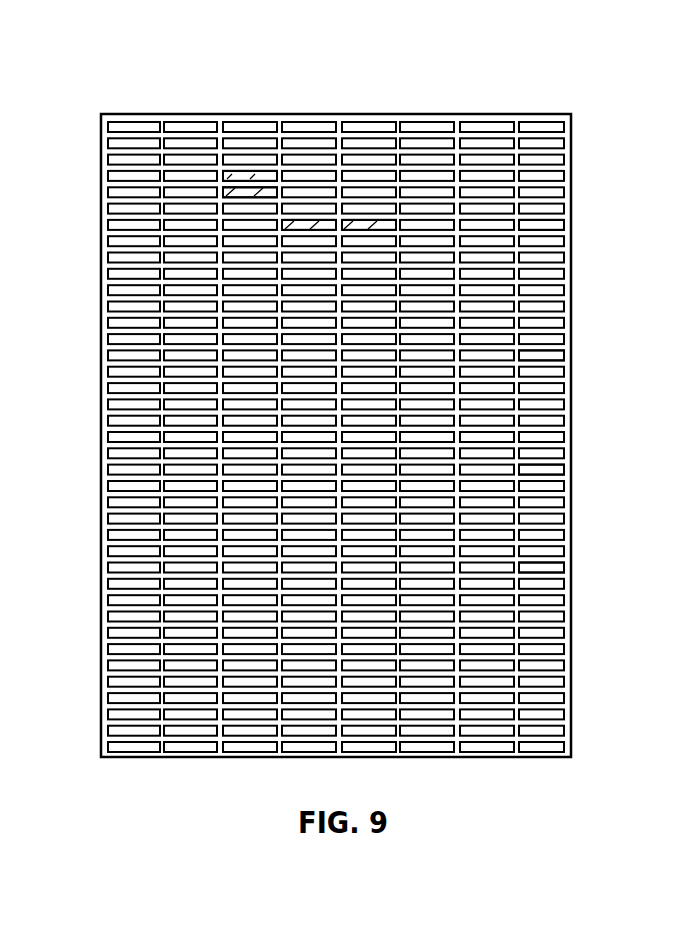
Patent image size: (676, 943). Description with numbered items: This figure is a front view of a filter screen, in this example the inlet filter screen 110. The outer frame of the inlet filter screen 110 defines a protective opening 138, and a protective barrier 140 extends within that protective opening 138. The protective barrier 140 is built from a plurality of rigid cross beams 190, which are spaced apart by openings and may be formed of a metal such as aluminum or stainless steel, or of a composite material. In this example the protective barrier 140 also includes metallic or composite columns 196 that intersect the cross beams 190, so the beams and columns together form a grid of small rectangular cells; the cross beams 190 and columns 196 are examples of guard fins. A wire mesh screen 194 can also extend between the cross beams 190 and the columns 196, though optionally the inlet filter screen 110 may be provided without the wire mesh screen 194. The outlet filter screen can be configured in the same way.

The inlet filter screen 110 is at (100, 50).
The protective opening 138 is at (556, 231).
The protective barrier 140 is at (533, 348).
The cross beams 190 is at (553, 468).
The wire mesh screen 194 is at (243, 192).
The columns 196 is at (403, 125).